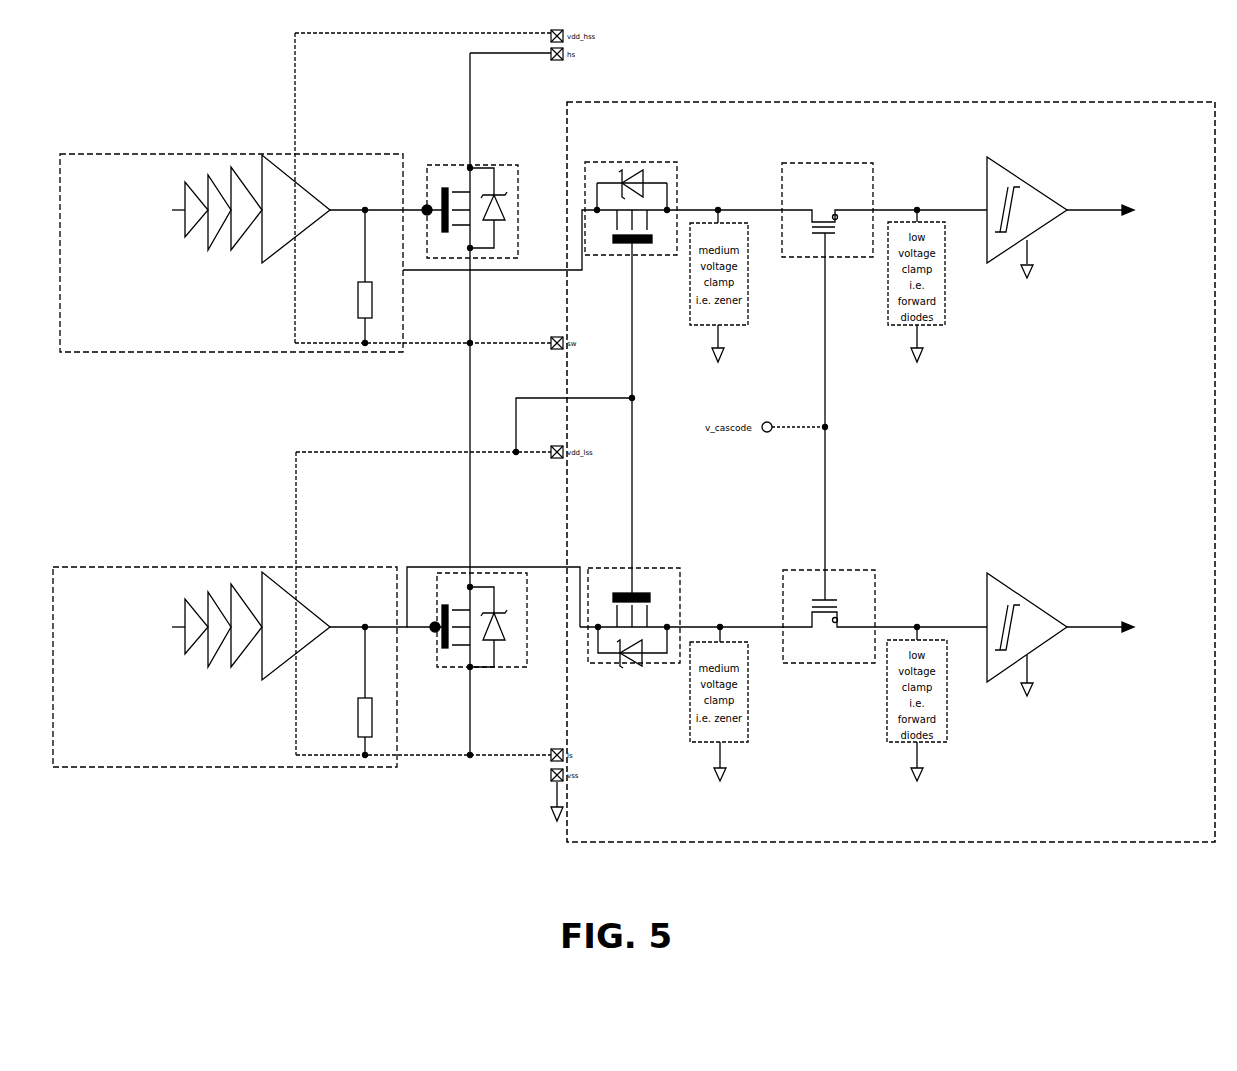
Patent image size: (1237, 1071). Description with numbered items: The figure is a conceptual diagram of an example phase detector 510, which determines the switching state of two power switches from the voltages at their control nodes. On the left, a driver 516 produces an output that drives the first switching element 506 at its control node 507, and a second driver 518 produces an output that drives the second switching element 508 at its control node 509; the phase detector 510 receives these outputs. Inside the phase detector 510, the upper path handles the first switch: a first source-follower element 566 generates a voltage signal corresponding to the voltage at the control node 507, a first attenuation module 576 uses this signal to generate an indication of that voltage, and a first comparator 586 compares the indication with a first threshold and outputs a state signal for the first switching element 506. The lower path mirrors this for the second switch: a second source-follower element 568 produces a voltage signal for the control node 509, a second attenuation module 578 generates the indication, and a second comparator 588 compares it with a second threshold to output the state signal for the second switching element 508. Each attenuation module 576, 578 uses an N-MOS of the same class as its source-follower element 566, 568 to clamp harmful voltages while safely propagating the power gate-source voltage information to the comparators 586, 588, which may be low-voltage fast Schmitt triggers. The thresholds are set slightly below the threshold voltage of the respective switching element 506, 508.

The phase detector 510 is at (1003, 102).
The driver 516 is at (338, 154).
The driver 518 is at (331, 567).
The first switching element 506 is at (494, 165).
The control node 507 is at (425, 205).
The second switching element 508 is at (493, 573).
The control node 509 is at (433, 633).
The first source-follower element 566 is at (657, 163).
The second source-follower element 568 is at (658, 568).
The first attenuation module 576 is at (853, 163).
The second attenuation module 578 is at (853, 570).
The first comparator 586 is at (1031, 188).
The second comparator 588 is at (1023, 600).